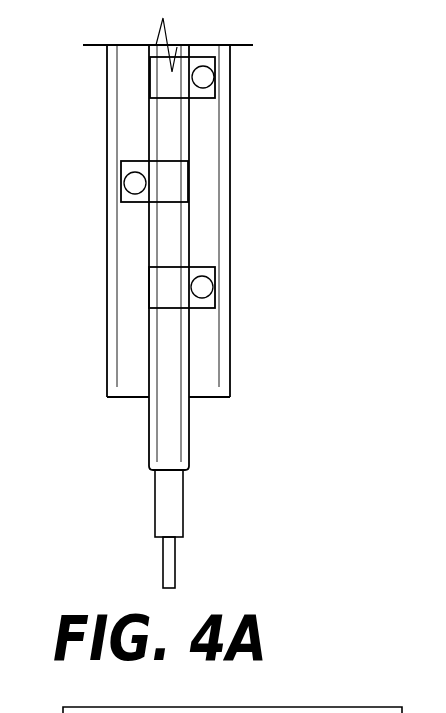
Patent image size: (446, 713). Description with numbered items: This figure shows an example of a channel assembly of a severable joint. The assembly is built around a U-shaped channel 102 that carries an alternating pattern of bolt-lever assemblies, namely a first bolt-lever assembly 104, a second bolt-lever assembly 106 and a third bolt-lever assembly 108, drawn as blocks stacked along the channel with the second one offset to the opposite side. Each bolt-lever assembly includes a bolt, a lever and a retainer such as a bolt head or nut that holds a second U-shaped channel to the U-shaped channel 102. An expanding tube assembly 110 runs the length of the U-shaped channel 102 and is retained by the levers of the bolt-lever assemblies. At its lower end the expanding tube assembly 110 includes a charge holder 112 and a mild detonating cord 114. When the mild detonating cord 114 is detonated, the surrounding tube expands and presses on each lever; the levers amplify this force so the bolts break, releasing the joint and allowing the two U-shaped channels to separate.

The U-shaped channel 102 is at (107, 83).
The first bolt-lever assembly 104 is at (215, 92).
The second bolt-lever assembly 106 is at (121, 170).
The third bolt-lever assembly 108 is at (215, 302).
The expanding tube assembly 110 is at (149, 430).
The charge holder 112 is at (155, 505).
The mild detonating cord 114 is at (163, 563).